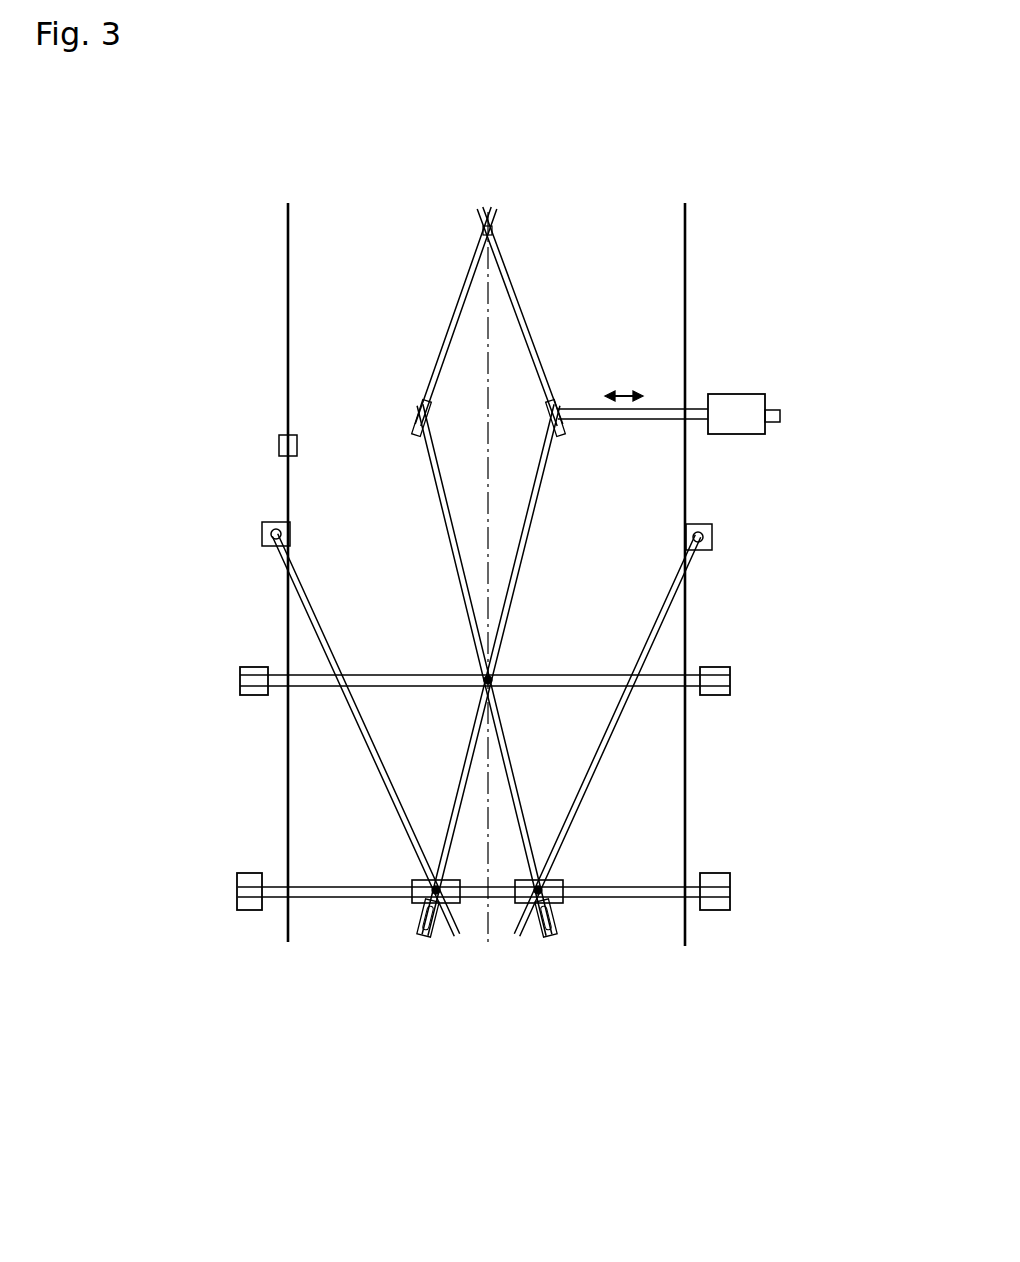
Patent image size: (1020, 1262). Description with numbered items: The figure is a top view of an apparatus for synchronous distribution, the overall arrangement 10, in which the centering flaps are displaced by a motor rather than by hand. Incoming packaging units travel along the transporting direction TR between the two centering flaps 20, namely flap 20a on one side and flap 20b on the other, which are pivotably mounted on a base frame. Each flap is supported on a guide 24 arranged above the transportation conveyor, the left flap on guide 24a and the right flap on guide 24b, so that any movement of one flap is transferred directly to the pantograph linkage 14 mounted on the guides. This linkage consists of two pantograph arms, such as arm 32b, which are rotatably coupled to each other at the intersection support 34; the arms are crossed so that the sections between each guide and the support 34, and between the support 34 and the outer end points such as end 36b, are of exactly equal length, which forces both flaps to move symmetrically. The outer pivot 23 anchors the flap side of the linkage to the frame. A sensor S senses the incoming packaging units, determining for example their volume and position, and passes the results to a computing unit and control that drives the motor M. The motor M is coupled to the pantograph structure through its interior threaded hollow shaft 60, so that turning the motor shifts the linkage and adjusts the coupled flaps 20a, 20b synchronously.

The arrangement 10 is at (366, 1083).
The scissor linkage mechanism 14 is at (604, 162).
The transport direction TR is at (350, 228).
The sensor S is at (287, 428).
The motor M is at (747, 403).
The hollow shaft 60 is at (688, 378).
The end point 36b is at (418, 412).
The pantograph arm 32b is at (445, 481).
The support 34 is at (492, 684).
The fixed pivot bearing 23 is at (263, 533).
The flaps 20 is at (510, 696).
The centering flap 20a is at (276, 696).
The centering flap 20b is at (672, 606).
The guides 24 is at (496, 953).
The guide 24a is at (403, 900).
The guide 24b is at (563, 900).